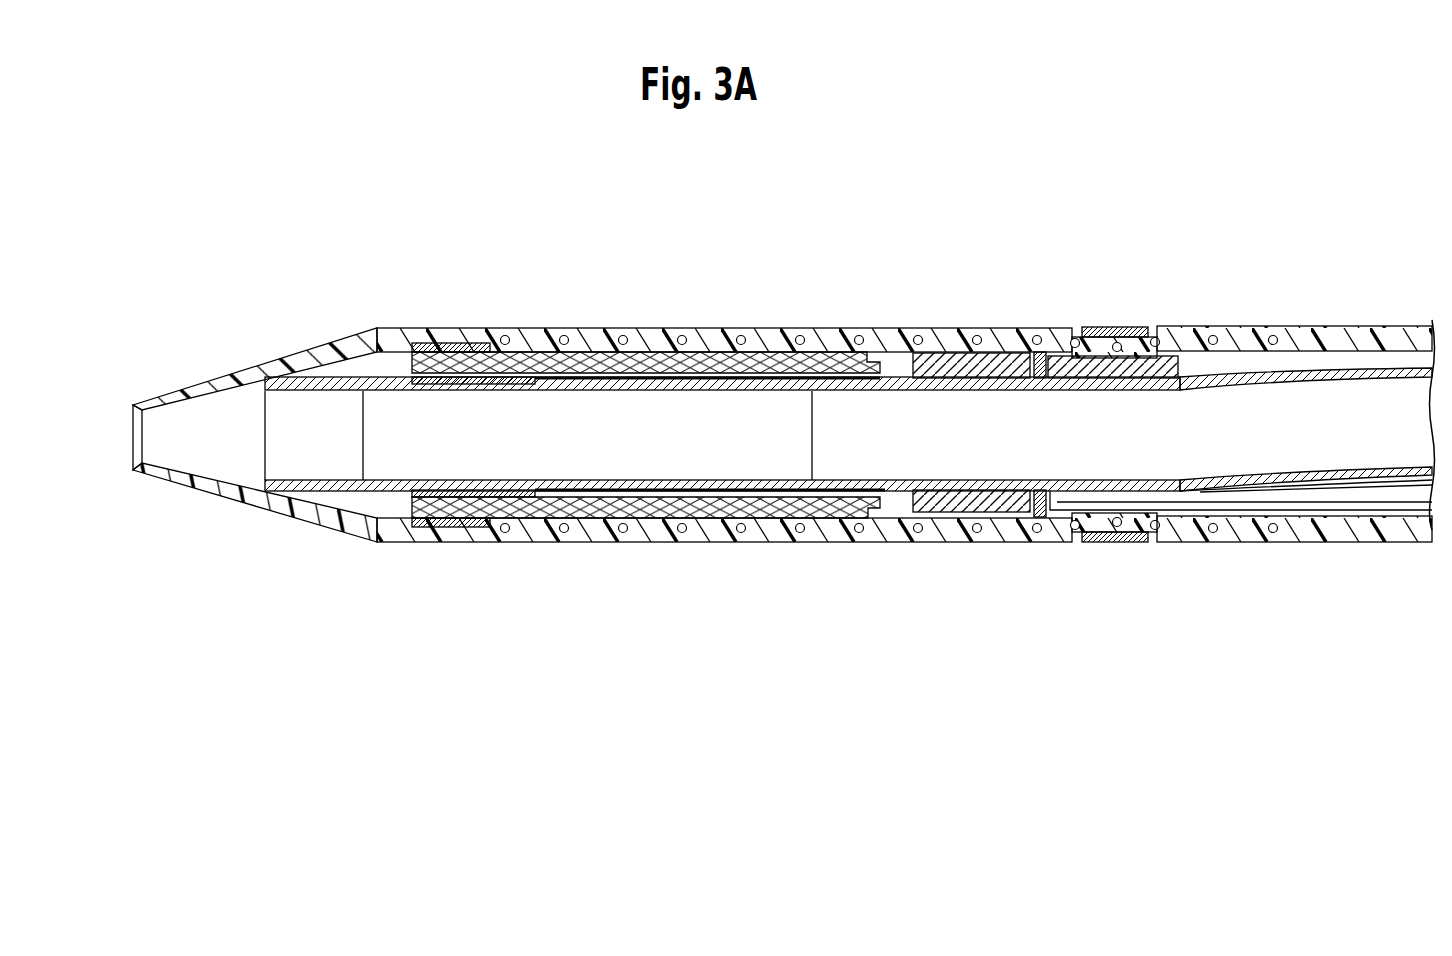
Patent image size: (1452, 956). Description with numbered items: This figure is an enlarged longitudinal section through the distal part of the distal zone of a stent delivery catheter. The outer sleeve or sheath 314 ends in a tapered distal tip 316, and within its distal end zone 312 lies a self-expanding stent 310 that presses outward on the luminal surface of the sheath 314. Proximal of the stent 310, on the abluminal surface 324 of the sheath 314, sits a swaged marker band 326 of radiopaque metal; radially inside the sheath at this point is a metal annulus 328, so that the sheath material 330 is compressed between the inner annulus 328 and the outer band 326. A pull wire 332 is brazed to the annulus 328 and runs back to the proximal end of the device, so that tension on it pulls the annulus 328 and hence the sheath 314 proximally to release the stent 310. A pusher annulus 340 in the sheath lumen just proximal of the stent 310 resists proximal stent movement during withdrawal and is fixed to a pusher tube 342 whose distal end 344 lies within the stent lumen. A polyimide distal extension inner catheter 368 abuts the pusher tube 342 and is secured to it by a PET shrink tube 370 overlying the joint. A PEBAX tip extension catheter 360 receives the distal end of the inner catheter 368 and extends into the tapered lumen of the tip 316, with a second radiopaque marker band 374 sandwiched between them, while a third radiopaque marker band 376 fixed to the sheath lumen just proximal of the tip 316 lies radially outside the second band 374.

The self-expanding stent 310 is at (538, 355).
The distal end zone 312 is at (724, 389).
The sleeve or sheath 314 is at (1340, 326).
The tapered distal tip 316 is at (207, 378).
The abluminal surface 324 is at (1018, 327).
The swaged marker band 326 is at (1100, 336).
The metal annulus 328 is at (1193, 356).
The sheath material 330 is at (1127, 346).
The pull wire 332 is at (1340, 500).
The pusher annulus 340 is at (943, 354).
The pusher tube 342 is at (898, 487).
The distal end of pusher tube 344 is at (815, 483).
The tip extension catheter 360 is at (318, 497).
The distal extension inner catheter 368 is at (648, 355).
The shrink tube 370 is at (770, 356).
The second radiopaque metal marker band 374 is at (459, 491).
The third radiopaque metal marker band 376 is at (441, 344).